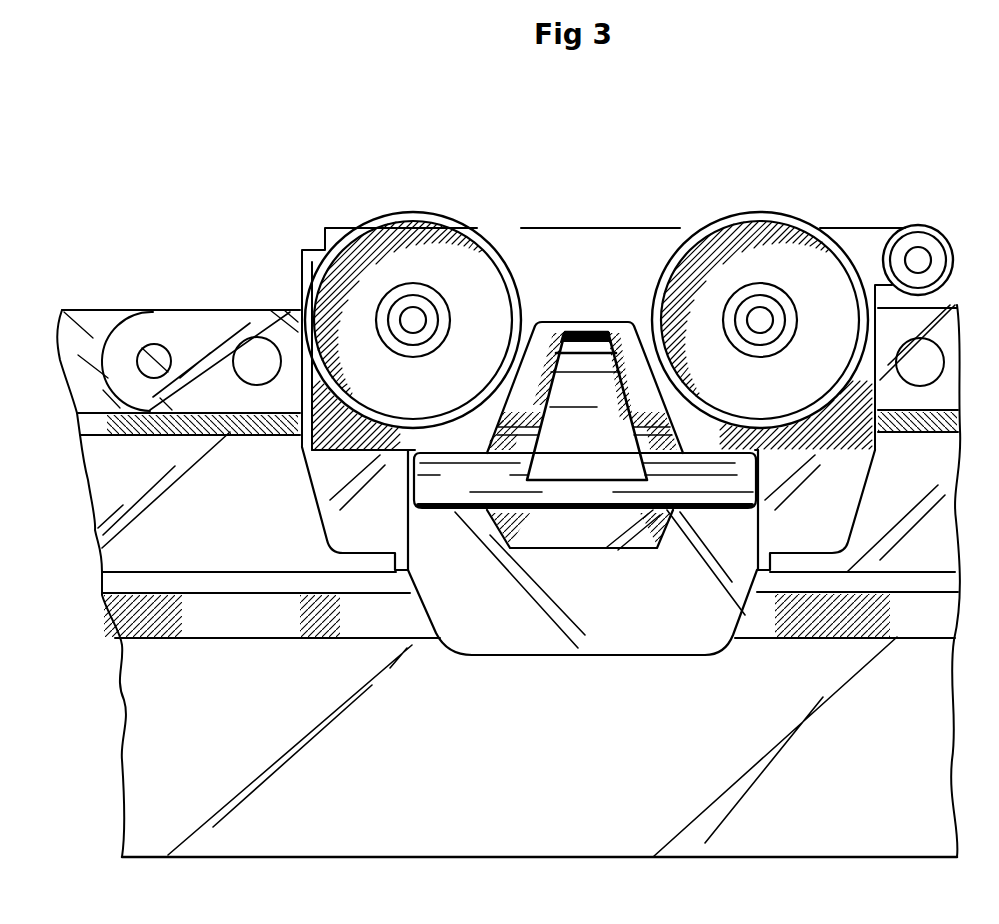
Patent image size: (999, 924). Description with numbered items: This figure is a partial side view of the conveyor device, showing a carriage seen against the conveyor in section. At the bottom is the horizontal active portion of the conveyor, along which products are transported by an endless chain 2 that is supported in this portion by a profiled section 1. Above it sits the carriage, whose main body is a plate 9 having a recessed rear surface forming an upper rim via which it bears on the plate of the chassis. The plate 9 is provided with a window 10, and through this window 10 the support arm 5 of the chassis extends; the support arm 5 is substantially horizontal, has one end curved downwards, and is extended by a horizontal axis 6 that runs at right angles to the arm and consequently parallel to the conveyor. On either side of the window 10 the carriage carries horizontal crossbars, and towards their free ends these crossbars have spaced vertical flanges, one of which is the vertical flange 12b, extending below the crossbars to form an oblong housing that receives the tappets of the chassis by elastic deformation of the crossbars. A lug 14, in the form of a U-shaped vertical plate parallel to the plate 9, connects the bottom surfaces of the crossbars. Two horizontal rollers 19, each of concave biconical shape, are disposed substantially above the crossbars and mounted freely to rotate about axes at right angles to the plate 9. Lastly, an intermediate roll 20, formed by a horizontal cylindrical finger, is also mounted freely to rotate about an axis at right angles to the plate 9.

The profiled section 1 is at (162, 668).
The endless chain 2 is at (222, 303).
The support arm 5 is at (583, 360).
The horizontal axis 6 is at (452, 490).
The plate 9 is at (624, 250).
The window 10 is at (622, 330).
The vertical flange 12b is at (353, 540).
The lug 14 is at (563, 605).
The horizontal roller 19 is at (470, 265).
The intermediate roll 20 is at (915, 245).